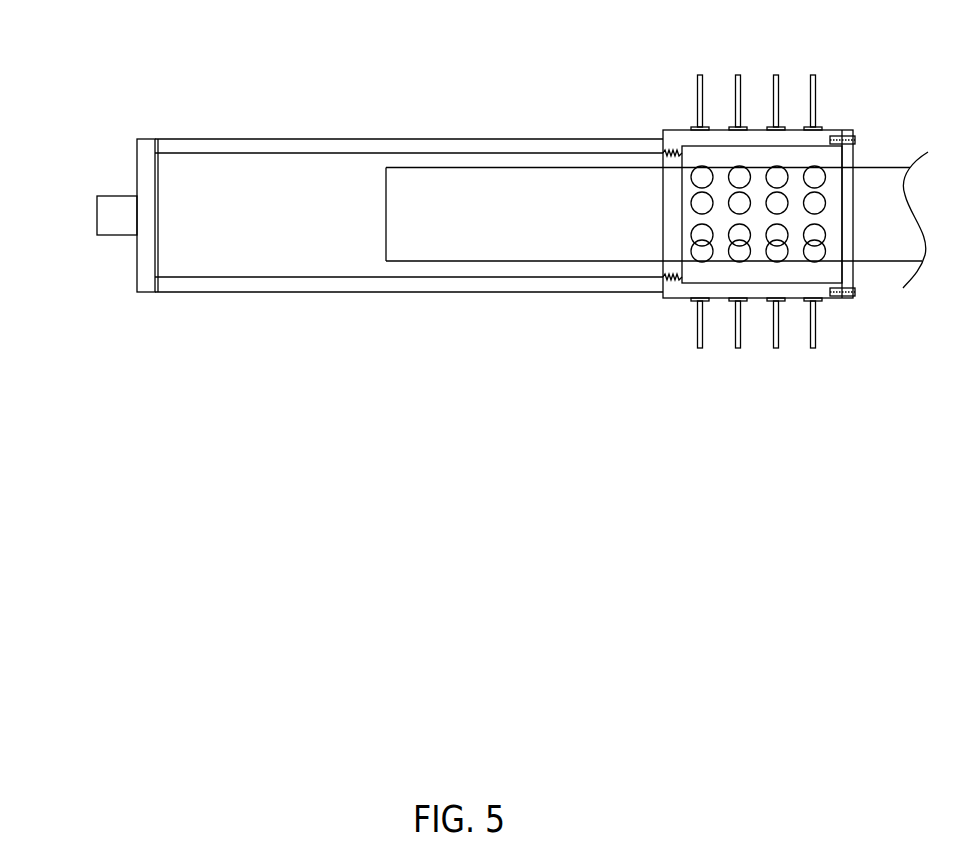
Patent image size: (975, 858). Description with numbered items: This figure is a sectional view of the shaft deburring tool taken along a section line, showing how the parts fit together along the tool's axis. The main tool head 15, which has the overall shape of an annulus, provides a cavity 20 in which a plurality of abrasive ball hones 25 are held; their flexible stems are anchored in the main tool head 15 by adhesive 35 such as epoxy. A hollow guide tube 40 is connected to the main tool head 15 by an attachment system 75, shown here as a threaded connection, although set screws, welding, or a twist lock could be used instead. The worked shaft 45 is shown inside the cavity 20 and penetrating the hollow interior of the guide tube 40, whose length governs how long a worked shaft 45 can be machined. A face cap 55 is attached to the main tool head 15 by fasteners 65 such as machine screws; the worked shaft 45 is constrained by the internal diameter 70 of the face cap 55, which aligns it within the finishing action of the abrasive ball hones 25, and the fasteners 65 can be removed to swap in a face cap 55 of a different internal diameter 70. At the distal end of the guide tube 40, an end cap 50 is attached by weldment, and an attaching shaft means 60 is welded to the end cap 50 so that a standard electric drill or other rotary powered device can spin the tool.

The main tool head 15 is at (722, 300).
The cavity 20 is at (833, 208).
The abrasive ball hones 25 is at (703, 177).
The adhesive 35 is at (700, 305).
The guide tube 40 is at (240, 282).
The worked shaft 45 is at (442, 235).
The end cap 50 is at (136, 292).
The face cap 55 is at (847, 158).
The attaching shaft means 60 is at (109, 216).
The fasteners 65 is at (853, 138).
The internal diameter 70 is at (840, 263).
The attachment system 75 is at (680, 152).